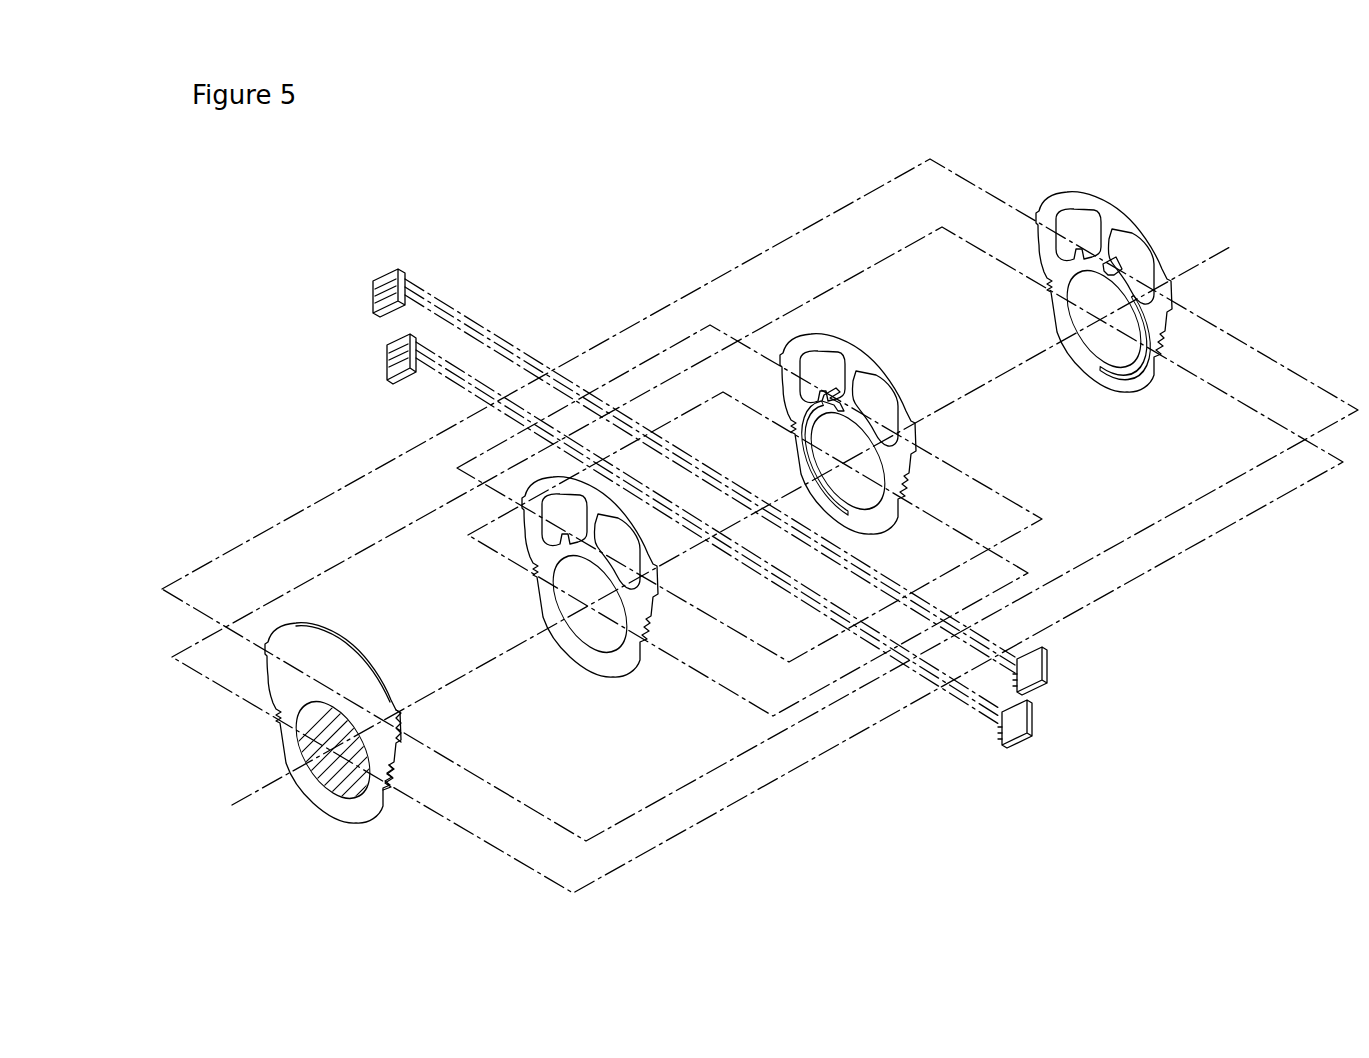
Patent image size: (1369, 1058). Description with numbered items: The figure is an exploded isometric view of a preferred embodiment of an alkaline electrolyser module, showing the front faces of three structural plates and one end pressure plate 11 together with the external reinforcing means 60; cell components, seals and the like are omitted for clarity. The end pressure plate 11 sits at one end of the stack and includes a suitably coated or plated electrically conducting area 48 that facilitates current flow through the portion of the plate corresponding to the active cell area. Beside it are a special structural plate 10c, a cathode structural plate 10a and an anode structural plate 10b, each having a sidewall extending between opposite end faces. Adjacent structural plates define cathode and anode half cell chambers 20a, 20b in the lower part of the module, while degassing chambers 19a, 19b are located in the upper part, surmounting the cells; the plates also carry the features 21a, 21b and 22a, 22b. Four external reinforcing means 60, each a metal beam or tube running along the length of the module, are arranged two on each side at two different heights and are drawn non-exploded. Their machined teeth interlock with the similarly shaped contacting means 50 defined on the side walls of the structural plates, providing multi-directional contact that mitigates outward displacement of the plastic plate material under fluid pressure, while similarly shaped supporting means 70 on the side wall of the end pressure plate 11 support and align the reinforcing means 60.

The end pressure plate 11 is at (360, 806).
The electrically conducting area 48 is at (312, 740).
The supporting means 70 is at (277, 722).
The external reinforcing means 60 is at (390, 367).
The special structural plate 10c is at (612, 663).
The cathode structural plate 10a is at (855, 517).
The anode structural plate 10b is at (1077, 353).
The degassing chamber 19a is at (565, 510).
The degassing chamber 19b is at (615, 543).
The tab 21a is at (832, 393).
The tab 21b is at (1120, 257).
The arcuate slot 22a is at (807, 467).
The arcuate slot 22b is at (1140, 353).
The cathode half cell chamber 20a is at (857, 473).
The anode half cell chamber 20b is at (1102, 330).
The contacting means 50 is at (525, 503).